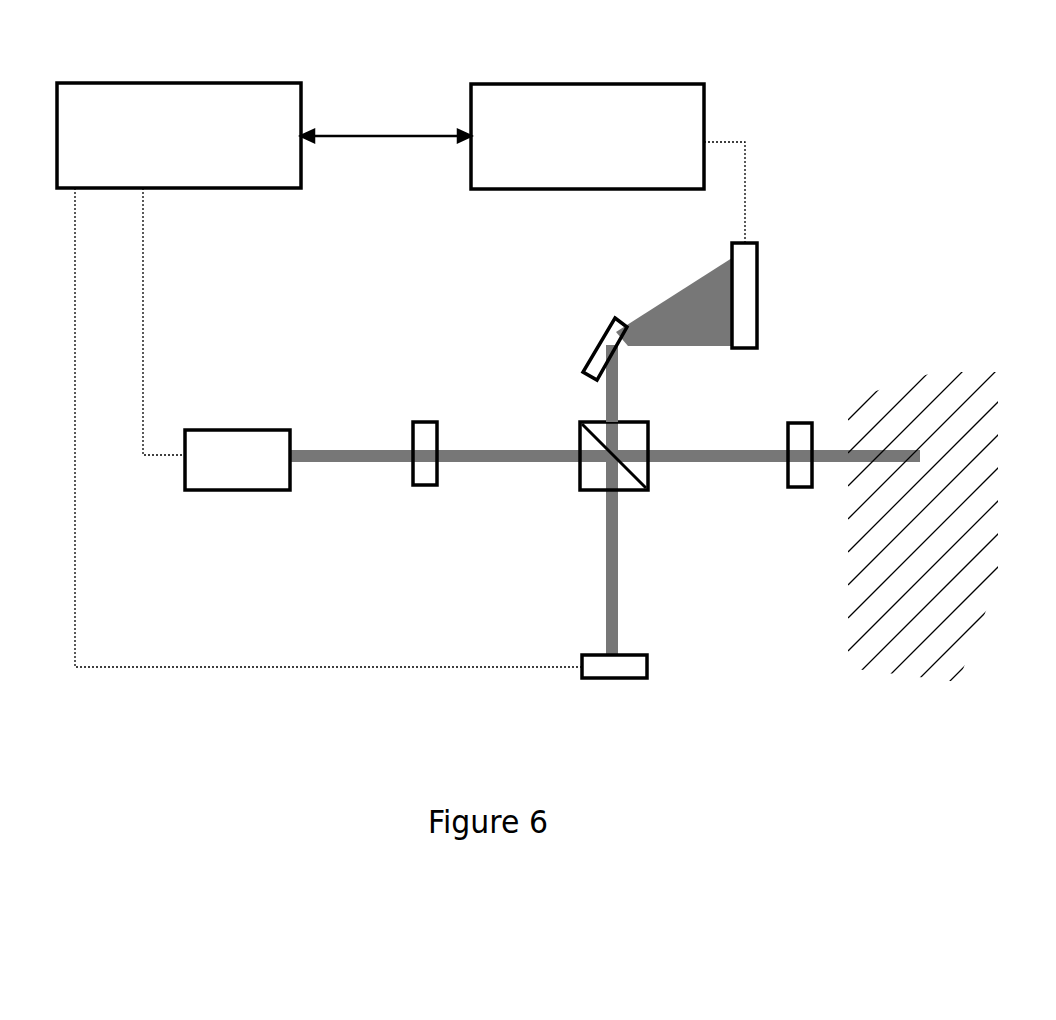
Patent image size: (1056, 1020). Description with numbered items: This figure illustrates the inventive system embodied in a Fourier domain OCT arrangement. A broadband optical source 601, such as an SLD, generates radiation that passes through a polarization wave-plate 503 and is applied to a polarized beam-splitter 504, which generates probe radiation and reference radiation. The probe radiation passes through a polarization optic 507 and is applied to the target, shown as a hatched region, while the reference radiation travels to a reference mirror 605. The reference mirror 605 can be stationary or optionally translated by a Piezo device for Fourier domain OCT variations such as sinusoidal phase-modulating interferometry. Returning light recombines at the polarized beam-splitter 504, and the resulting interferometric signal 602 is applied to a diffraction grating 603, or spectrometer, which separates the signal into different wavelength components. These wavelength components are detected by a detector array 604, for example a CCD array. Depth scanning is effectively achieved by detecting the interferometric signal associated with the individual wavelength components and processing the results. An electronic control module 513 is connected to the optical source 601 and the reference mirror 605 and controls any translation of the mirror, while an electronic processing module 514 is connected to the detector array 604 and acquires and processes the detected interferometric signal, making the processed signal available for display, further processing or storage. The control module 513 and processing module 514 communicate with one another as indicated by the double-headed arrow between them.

The electronic control module 513 is at (302, 86).
The electronic processing module 514 is at (708, 88).
The detector array 604 is at (762, 252).
The diffraction grating 603 is at (582, 330).
The polarized beam-splitter 504 is at (580, 420).
The interferometric signal 602 is at (623, 378).
The optical source 601 is at (230, 494).
The polarization wave-plate 503 is at (423, 488).
The polarization optic 507 is at (797, 490).
The reference mirror 605 is at (651, 667).